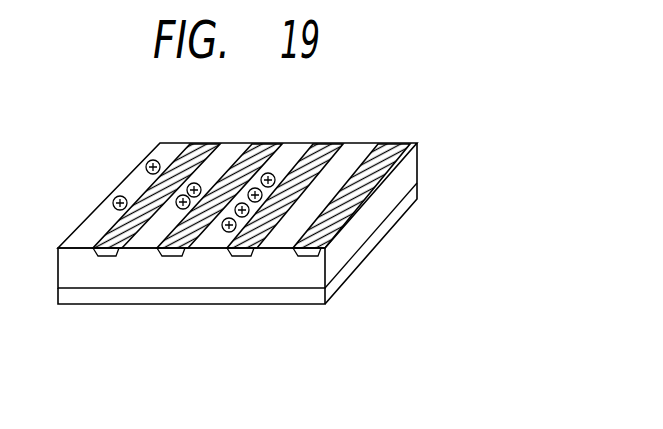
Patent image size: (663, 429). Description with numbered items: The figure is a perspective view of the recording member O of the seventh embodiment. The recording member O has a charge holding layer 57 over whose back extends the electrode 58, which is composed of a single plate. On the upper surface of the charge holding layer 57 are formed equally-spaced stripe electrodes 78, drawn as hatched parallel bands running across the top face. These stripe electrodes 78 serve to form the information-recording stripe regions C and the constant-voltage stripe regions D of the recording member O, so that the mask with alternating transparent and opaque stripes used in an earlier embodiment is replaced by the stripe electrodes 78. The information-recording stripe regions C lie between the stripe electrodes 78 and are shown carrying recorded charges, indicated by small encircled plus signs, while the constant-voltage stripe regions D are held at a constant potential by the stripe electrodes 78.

The recording member O is at (379, 261).
The charge holding layer 57 is at (205, 276).
The electrode 58 is at (258, 295).
The constant-voltage stripe region D is at (203, 157).
The information-recording stripe region C is at (293, 157).
The stripe electrodes 78 is at (330, 155).